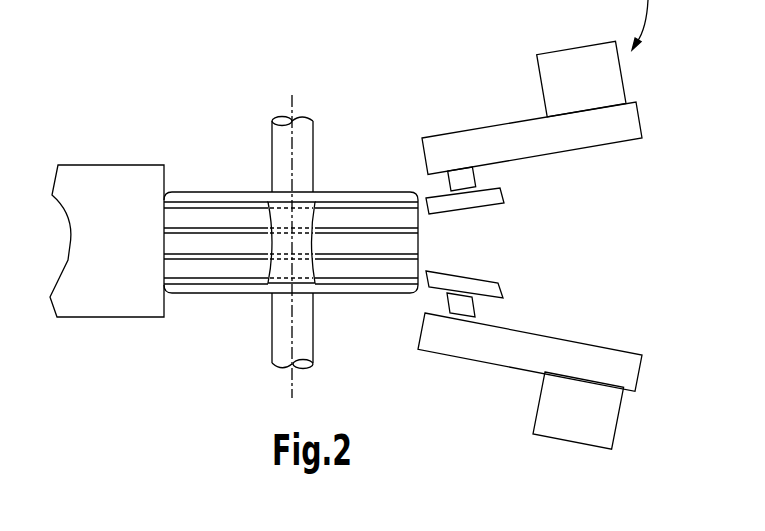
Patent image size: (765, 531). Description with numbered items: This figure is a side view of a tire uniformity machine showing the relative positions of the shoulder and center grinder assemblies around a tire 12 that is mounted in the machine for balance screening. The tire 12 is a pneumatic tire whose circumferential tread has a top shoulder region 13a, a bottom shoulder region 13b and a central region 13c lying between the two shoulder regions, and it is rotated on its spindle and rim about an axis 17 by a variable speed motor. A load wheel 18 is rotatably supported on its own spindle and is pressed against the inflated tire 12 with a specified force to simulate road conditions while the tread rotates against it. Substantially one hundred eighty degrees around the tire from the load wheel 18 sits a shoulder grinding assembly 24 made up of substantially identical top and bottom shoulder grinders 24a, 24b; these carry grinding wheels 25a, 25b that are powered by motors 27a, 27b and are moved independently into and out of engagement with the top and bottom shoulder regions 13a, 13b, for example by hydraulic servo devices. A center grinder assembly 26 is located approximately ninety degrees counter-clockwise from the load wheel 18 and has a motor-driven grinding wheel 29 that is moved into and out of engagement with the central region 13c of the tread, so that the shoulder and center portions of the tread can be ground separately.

The tire 12 is at (219, 293).
The top shoulder region 13a is at (440, 222).
The bottom shoulder region 13b is at (436, 261).
The central region 13c is at (432, 238).
The axis 17 is at (292, 95).
The load wheel 18 is at (120, 182).
The shoulder grinding assembly 24 is at (662, 138).
The top shoulder grinder 24a is at (640, 25).
The bottom shoulder grinder 24b is at (651, 461).
The grinding wheel 25a is at (493, 194).
The grinding wheel 25b is at (490, 298).
The center grinder assembly 26 is at (256, 167).
The motor 27a is at (603, 87).
The motor 27b is at (583, 412).
The grinding wheel 29 is at (310, 234).